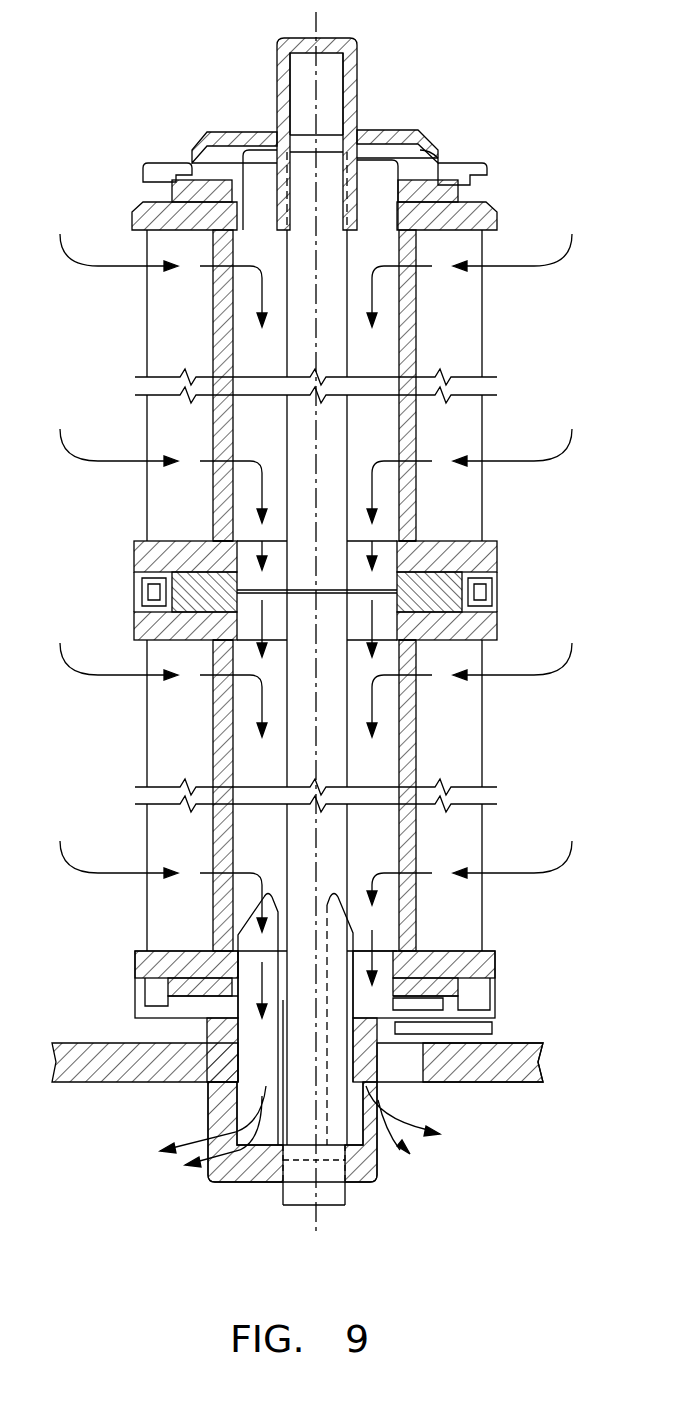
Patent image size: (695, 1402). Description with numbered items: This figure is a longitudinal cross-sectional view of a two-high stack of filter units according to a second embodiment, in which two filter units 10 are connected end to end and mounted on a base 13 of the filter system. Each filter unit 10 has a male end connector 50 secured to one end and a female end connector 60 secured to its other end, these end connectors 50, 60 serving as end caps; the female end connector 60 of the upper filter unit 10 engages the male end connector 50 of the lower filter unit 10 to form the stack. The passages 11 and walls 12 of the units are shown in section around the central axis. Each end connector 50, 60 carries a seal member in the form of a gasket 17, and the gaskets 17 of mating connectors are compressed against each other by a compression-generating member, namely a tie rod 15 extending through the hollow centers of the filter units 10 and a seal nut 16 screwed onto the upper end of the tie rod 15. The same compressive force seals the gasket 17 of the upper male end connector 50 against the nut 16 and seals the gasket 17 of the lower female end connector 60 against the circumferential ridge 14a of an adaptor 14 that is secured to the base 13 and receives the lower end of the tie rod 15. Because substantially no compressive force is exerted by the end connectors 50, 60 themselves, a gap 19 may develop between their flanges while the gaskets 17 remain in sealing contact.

The filter unit 10 is at (484, 320).
The annular passage 11 is at (474, 350).
The inner tube wall 12 is at (416, 287).
The base 13 is at (505, 1083).
The adaptor 14 is at (395, 1030).
The circumferential ridge 14a is at (443, 1003).
The tie rod 15 is at (352, 444).
The seal nut 16 is at (440, 140).
The gasket 17 is at (178, 178).
The gap 19 is at (148, 592).
The male end connector 50 is at (497, 212).
The female end connector 60 is at (499, 550).